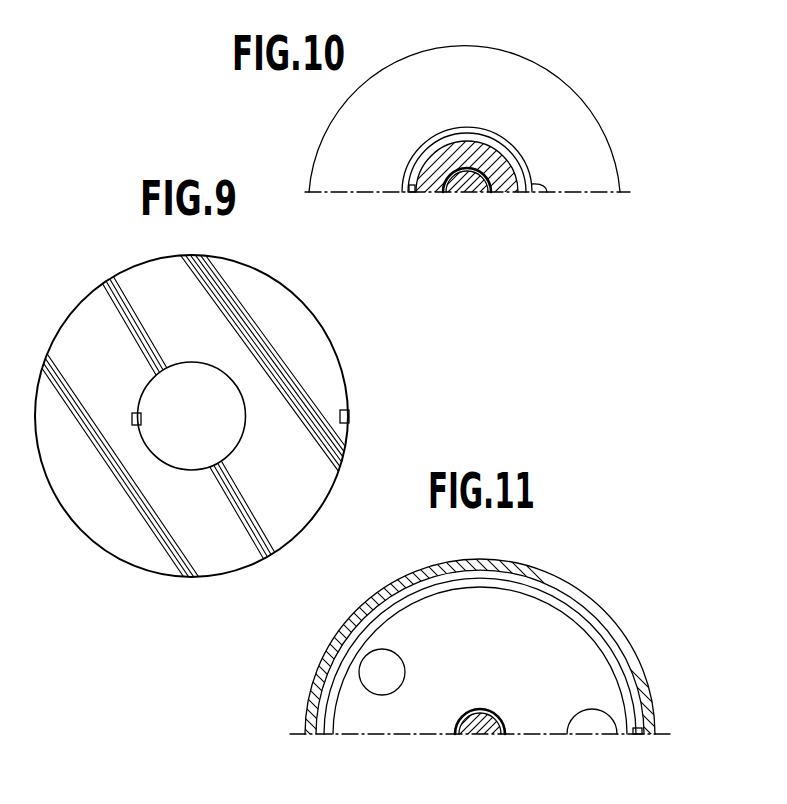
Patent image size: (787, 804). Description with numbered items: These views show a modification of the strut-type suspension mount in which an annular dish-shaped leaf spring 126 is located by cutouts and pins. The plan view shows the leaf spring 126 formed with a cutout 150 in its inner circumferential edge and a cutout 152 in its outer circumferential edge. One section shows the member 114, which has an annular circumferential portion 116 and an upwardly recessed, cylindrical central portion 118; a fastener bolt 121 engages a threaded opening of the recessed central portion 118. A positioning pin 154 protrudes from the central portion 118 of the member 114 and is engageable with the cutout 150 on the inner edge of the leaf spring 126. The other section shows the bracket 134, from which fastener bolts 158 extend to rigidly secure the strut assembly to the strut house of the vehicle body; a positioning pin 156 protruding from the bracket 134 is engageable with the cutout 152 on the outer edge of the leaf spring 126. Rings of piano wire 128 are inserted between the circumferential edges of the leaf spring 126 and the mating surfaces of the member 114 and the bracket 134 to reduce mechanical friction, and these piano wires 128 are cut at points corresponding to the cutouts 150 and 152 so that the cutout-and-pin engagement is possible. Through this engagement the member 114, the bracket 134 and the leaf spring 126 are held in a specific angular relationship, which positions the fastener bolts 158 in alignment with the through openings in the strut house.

In FIG. 10, the member 114 is at (515, 40).
In FIG. 10, the annular circumferential portion 116 is at (572, 97).
In FIG. 10, the recessed central portion 118 is at (539, 186).
In FIG. 10, the fastener bolt 121 is at (470, 188).
In FIG. 11, the fastener bolt 121 is at (478, 731).
In FIG. 10, the ring of piano wire 128 is at (440, 133).
In FIG. 11, the ring of piano wire 128 is at (627, 677).
In FIG. 10, the positioning pin 154 is at (412, 193).
In FIG. 9, the leaf spring 126 is at (265, 282).
In FIG. 9, the cutout 150 is at (141, 418).
In FIG. 9, the cutout 152 is at (350, 417).
In FIG. 11, the bracket 134 is at (588, 594).
In FIG. 11, the fastener bolts 158 is at (367, 662).
In FIG. 11, the positioning pin 156 is at (640, 740).